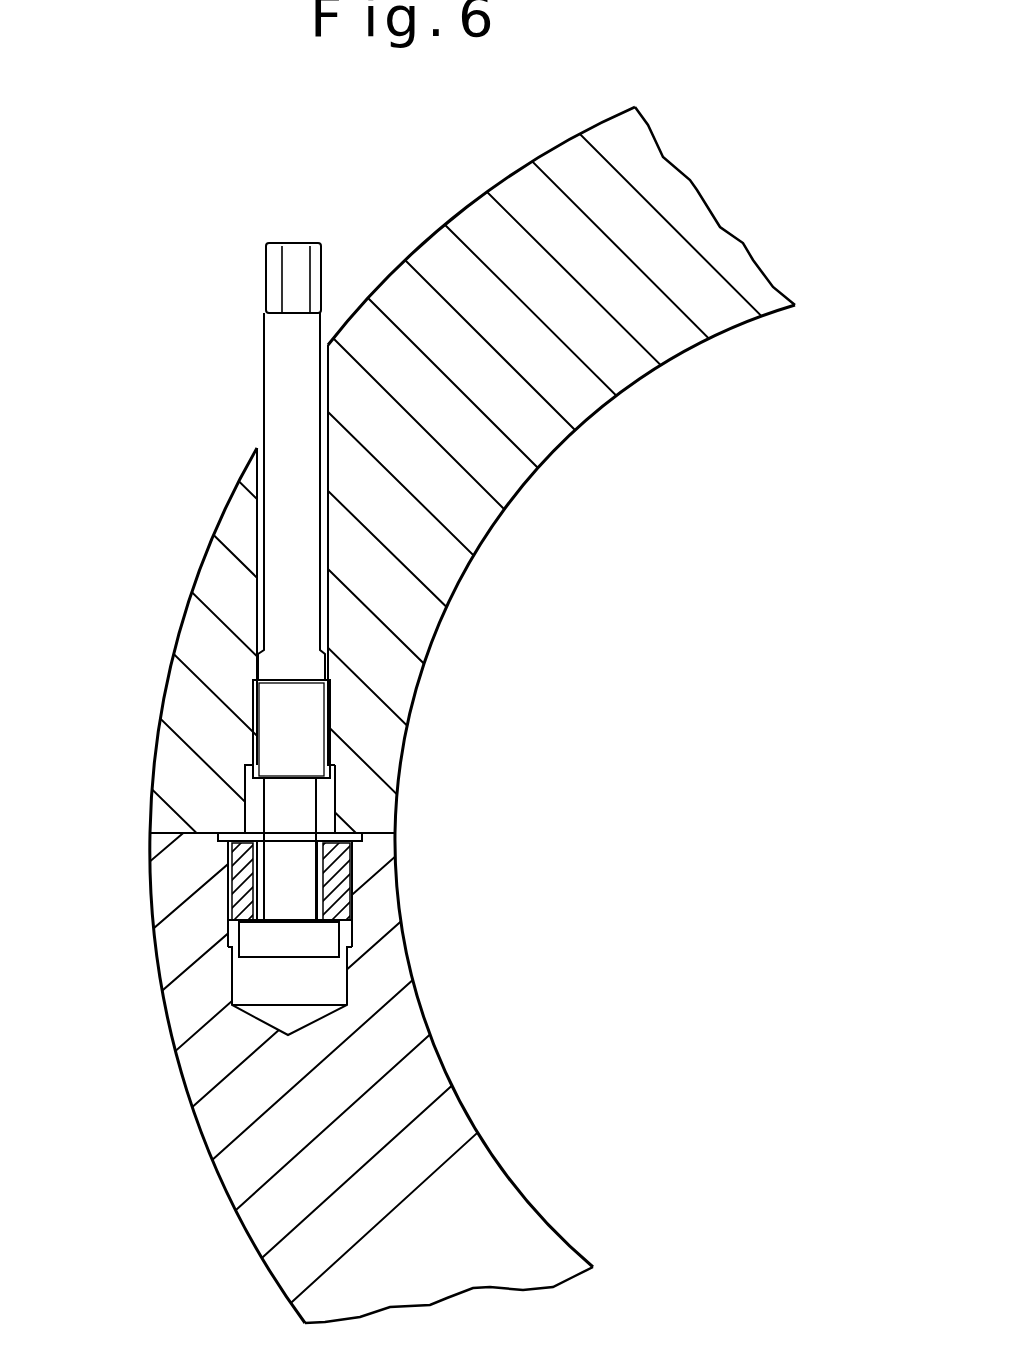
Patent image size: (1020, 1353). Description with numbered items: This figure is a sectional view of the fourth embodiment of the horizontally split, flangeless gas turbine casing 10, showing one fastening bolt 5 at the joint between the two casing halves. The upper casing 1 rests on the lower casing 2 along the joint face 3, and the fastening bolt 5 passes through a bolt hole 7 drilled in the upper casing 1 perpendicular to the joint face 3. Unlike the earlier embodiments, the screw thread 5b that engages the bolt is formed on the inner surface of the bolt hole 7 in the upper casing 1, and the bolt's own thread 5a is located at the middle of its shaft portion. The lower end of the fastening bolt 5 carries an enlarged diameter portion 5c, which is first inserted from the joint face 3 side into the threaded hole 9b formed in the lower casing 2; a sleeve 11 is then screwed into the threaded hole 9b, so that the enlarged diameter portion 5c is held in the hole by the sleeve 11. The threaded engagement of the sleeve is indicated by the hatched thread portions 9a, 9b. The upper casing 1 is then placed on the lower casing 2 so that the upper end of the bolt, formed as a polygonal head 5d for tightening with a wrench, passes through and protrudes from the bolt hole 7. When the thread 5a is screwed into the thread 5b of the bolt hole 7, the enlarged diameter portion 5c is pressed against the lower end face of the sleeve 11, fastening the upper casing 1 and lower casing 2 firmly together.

The upper casing 1 is at (673, 340).
The lower casing 2 is at (478, 1172).
The joint face 3 is at (170, 833).
The fastening bolt 5 is at (385, 606).
The screw thread 5a is at (327, 720).
The screw thread 5b is at (409, 729).
The enlarged diameter portion 5c is at (305, 944).
The polygonal head 5d is at (302, 277).
The bolt hole 7 is at (323, 463).
The threaded insert portion 9a is at (353, 910).
The threaded hole 9b is at (442, 889).
The casing 10 is at (459, 180).
The sleeve 11 is at (352, 873).